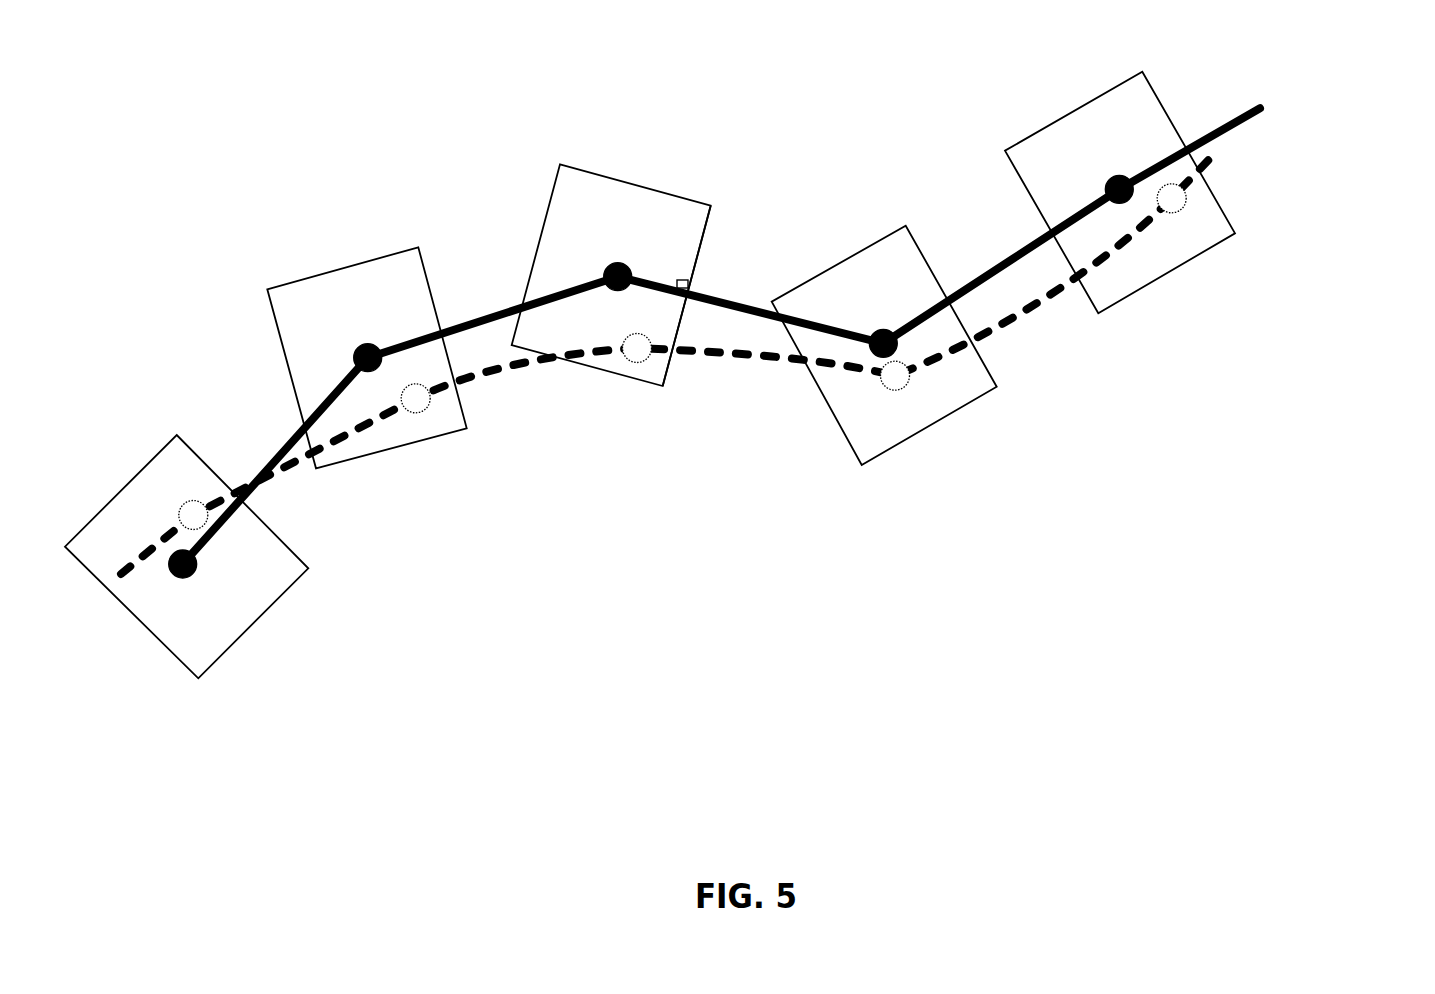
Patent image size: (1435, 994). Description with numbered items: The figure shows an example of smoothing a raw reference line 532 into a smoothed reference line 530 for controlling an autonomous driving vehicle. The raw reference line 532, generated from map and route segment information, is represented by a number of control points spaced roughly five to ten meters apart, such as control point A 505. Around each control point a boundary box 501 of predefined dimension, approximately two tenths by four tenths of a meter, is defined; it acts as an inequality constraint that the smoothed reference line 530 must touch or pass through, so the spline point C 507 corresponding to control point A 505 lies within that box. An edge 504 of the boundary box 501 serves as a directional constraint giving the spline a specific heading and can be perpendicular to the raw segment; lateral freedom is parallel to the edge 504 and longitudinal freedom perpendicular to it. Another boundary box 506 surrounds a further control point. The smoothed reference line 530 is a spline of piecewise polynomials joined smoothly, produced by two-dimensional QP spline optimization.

The boundary box 501 is at (562, 187).
The edge 504 is at (697, 263).
The control point A 505 is at (605, 286).
The bounding box 506 is at (840, 392).
The point C 507 is at (645, 364).
The smoothed reference line 530 is at (1213, 157).
The raw reference line 532 is at (1237, 128).